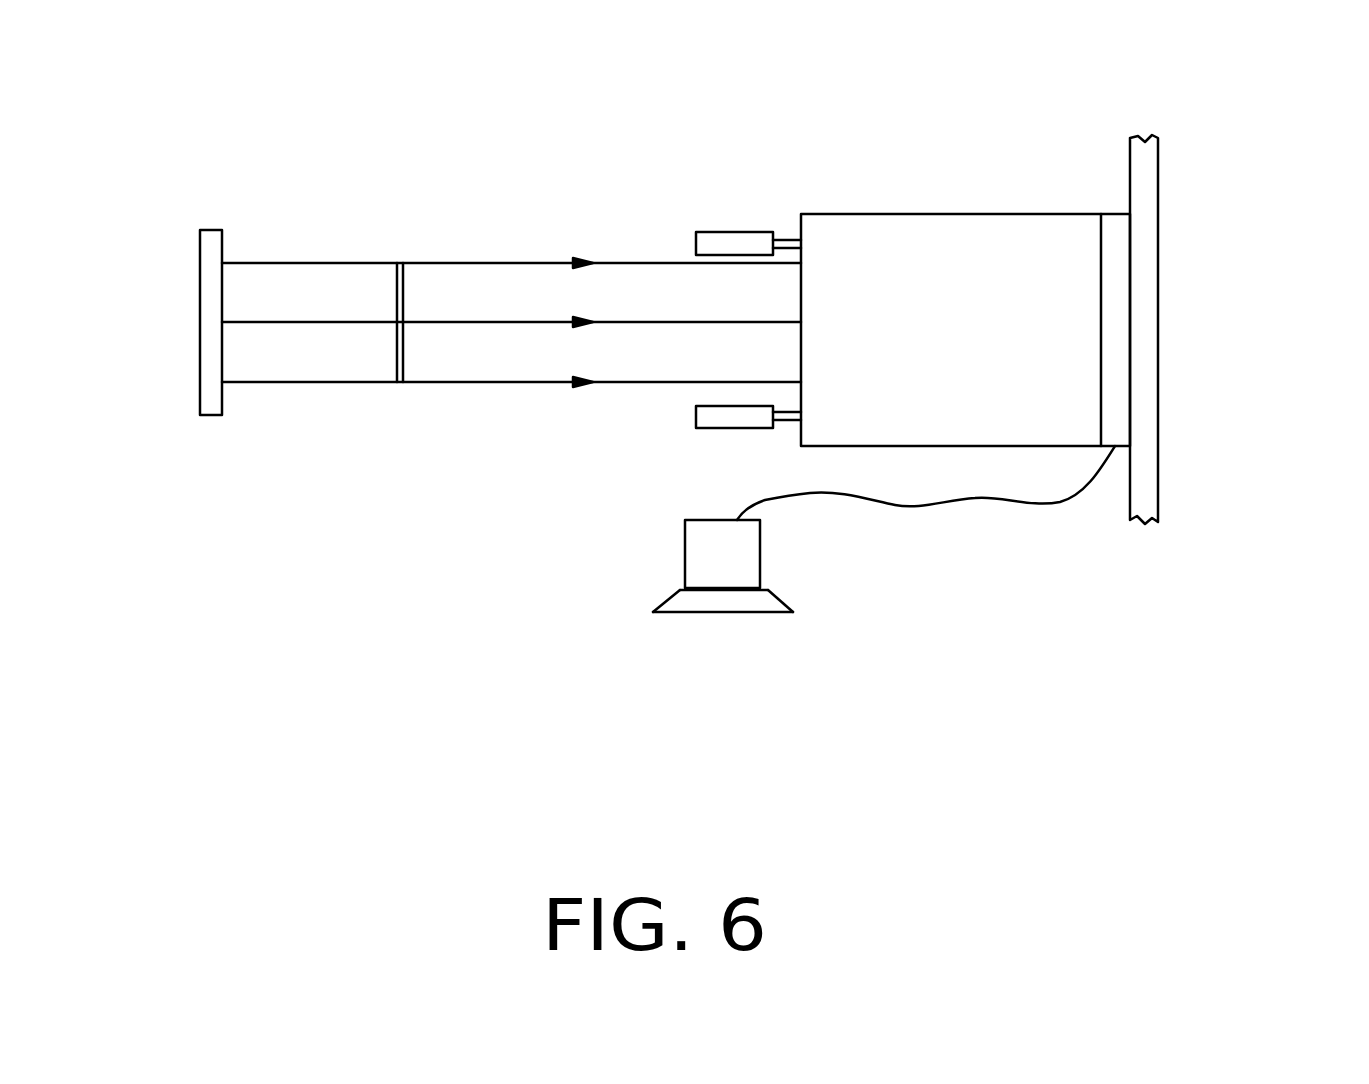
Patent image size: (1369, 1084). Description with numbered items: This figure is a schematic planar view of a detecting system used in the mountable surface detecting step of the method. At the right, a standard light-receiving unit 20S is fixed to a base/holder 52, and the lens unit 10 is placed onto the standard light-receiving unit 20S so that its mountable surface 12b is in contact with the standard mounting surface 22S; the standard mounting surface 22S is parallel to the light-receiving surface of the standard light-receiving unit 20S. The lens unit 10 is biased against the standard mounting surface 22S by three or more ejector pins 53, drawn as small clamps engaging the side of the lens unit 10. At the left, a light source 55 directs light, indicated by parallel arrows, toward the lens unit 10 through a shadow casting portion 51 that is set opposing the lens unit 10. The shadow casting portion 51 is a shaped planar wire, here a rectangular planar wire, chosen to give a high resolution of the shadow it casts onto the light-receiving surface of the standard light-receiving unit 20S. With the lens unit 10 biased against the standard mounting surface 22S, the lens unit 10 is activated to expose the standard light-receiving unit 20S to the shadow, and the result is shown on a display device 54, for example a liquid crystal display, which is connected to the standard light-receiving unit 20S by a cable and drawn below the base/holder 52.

The lens unit 10 is at (935, 250).
The mountable surface 12b is at (1112, 318).
The standard light-receiving unit 20S is at (1115, 228).
The standard mounting surface 22S is at (1088, 277).
The shadow casting portion 51 is at (398, 260).
The base/holder 52 is at (1148, 148).
The ejector pins 53 is at (718, 240).
The display device 54 is at (745, 557).
The light source 55 is at (212, 252).